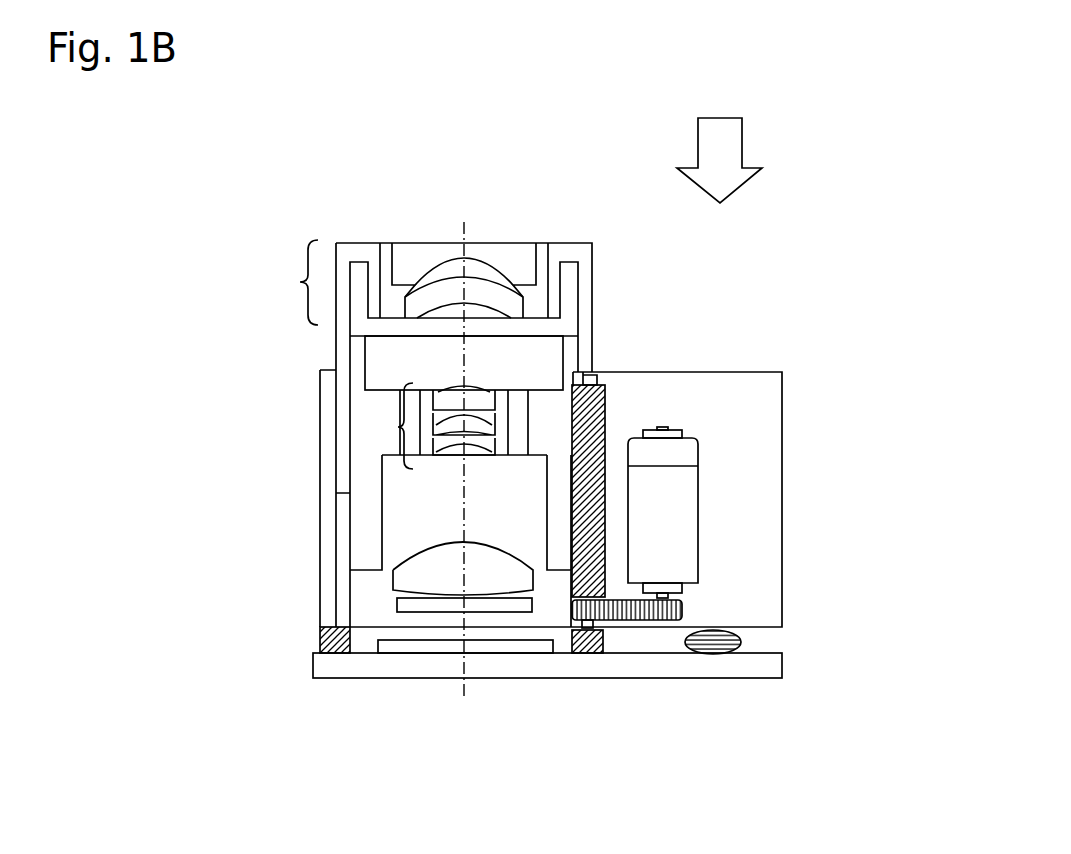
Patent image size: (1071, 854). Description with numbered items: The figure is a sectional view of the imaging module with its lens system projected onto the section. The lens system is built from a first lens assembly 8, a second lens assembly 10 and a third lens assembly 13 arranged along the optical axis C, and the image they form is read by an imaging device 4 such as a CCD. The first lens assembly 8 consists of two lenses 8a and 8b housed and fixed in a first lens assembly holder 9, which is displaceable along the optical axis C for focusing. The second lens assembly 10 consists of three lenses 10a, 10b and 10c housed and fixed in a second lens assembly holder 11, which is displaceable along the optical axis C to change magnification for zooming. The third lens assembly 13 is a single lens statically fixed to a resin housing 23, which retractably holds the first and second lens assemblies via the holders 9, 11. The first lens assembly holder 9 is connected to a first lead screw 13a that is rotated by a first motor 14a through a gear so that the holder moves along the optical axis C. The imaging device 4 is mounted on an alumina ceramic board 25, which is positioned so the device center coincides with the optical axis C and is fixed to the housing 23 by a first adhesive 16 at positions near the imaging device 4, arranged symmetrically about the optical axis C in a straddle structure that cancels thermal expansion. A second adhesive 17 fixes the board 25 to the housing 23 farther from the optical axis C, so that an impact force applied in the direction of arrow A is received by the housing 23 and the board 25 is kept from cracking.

The optical axis C is at (463, 223).
The arrow (direction of impact force) A is at (719, 141).
The first lens assembly 8 is at (300, 282).
The lens 8a is at (505, 262).
The lens 8b is at (427, 297).
The first lens assembly holder 9 is at (567, 253).
The second lens assembly 10 is at (398, 427).
The lens 10a is at (483, 402).
The lens 10b is at (480, 423).
The lens 10c is at (487, 445).
The second lens assembly holder 11 is at (563, 490).
The third lens assembly 13 is at (430, 563).
The first lead screw 13a is at (610, 445).
The first motor 14a is at (665, 515).
The first adhesive 16 is at (320, 639).
The second adhesive 17 is at (713, 642).
The housing 23 is at (750, 412).
The imaging device 4 is at (393, 643).
The board 25 is at (405, 678).